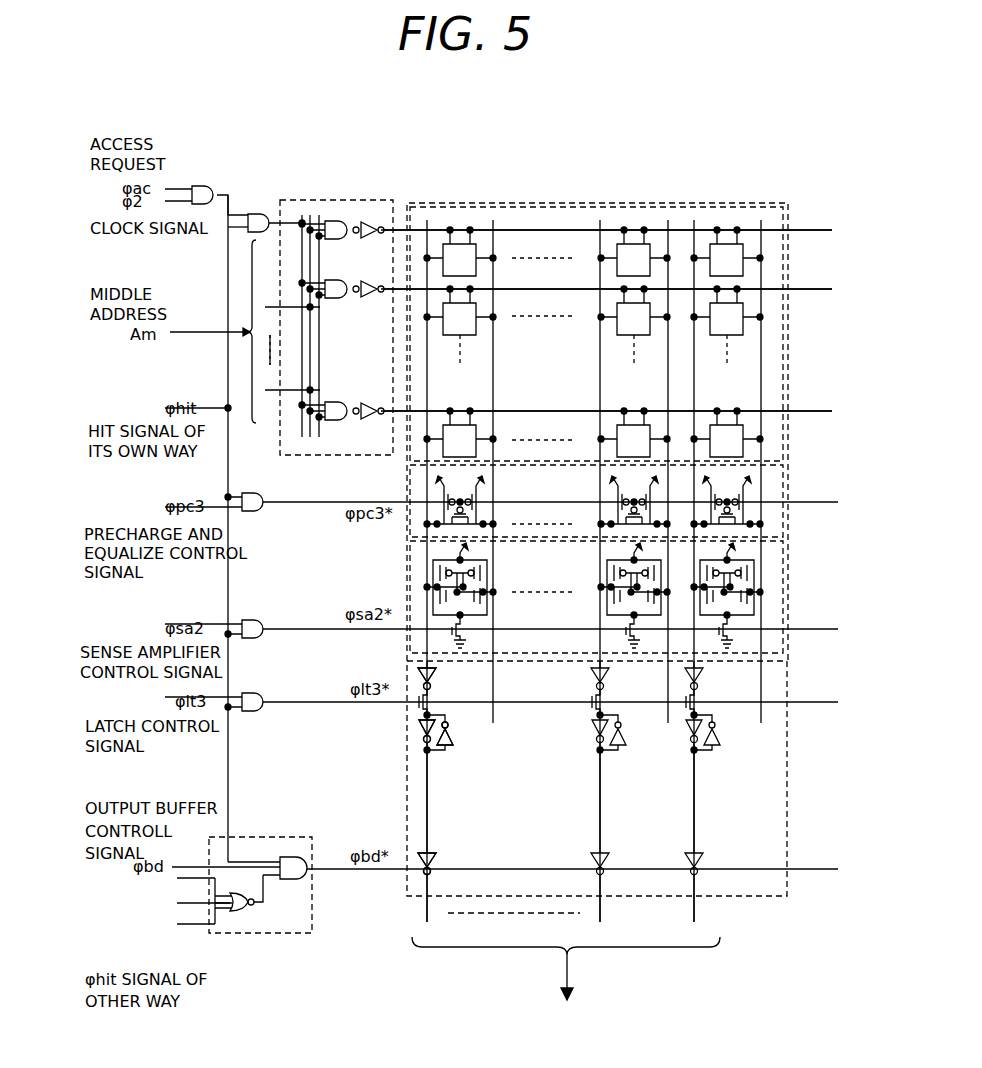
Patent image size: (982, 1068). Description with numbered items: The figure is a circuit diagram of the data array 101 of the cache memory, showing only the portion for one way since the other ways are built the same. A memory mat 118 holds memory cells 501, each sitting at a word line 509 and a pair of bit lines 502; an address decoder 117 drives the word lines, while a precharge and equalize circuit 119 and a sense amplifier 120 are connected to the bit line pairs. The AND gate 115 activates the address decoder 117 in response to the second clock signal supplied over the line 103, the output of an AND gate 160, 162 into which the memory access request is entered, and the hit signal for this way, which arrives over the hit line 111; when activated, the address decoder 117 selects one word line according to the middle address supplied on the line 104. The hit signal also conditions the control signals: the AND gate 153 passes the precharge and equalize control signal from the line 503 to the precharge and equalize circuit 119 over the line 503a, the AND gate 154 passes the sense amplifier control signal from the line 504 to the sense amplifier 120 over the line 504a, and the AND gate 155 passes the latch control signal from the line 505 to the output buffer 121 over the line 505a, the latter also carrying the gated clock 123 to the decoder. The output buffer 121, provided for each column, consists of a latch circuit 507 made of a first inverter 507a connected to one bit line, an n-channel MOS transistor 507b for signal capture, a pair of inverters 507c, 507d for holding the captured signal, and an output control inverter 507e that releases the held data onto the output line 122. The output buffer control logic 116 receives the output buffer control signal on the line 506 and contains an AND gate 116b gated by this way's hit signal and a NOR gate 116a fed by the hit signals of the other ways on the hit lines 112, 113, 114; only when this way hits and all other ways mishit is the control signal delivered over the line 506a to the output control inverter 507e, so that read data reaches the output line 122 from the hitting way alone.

The data array 101 is at (547, 178).
The line 103 is at (185, 187).
The line 104 is at (213, 328).
The hit line 111 is at (228, 372).
The hit line 112 is at (177, 880).
The hit line 113 is at (178, 904).
The hit line 114 is at (178, 926).
The AND gate 115 is at (258, 213).
The output buffer control logic 116 is at (300, 938).
The NOR gate 116a is at (252, 908).
The AND gate 116b is at (304, 878).
The address decoder 117 is at (280, 435).
The memory mat 118 is at (624, 552).
The precharge and equalize circuit 119 is at (788, 515).
The sense amplifier 120 is at (788, 641).
The output buffer 121 is at (645, 807).
The output line 122 is at (567, 975).
The clock signal φ2* 123 is at (288, 218).
The AND gate 153 is at (266, 510).
The AND gate 154 is at (250, 621).
The AND gate 155 is at (266, 708).
The control bus 160 is at (206, 186).
The AND gate 162 is at (224, 190).
The memory cell 501 is at (473, 268).
The pair of bit lines 502 is at (430, 350).
The line 503 is at (222, 508).
The line 503a is at (325, 504).
The line 504 is at (226, 624).
The line 504a is at (300, 628).
The line 505 is at (228, 698).
The line 505a is at (280, 703).
The line 506 is at (238, 858).
The line 506a is at (355, 873).
The latch circuit 507 is at (478, 797).
The first inverter 507a is at (436, 682).
The n-channel MOS transistor 507b is at (440, 712).
The inverter 507c is at (430, 752).
The inverter 507d is at (452, 740).
The output control inverter 507e is at (432, 872).
The word line 509 is at (800, 232).